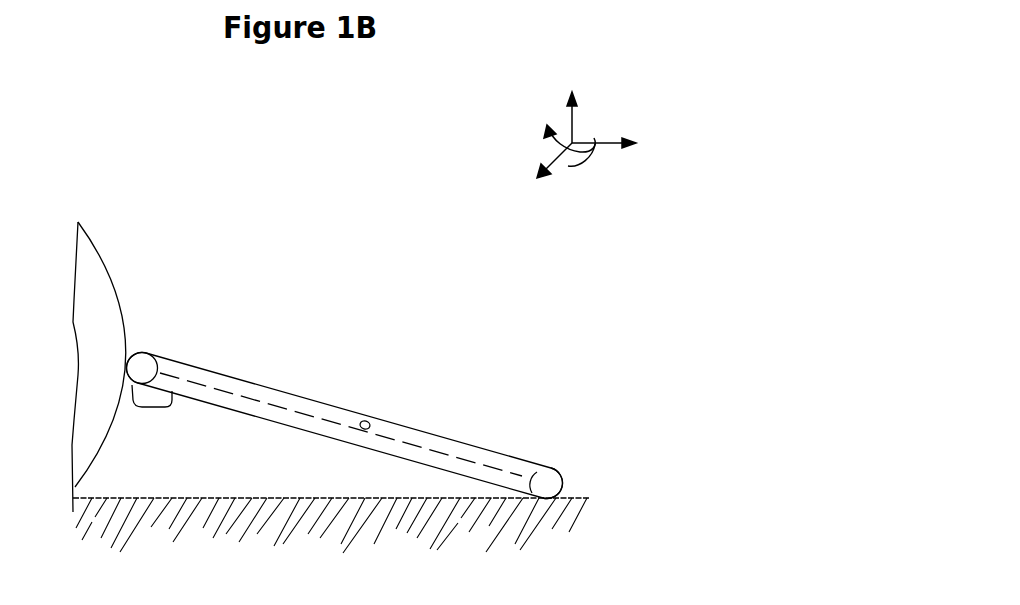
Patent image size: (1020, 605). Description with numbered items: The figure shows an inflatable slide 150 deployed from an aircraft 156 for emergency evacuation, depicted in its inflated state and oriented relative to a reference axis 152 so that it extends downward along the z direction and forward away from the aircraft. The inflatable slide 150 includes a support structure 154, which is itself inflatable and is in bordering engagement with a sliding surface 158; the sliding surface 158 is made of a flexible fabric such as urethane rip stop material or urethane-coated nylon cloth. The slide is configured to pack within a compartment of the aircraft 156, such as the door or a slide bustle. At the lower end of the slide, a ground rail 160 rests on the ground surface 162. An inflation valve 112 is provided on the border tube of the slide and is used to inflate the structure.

The inflation valve 112 is at (373, 422).
The inflatable slide 150 is at (385, 356).
The reference axis 152 is at (648, 80).
The support structure 154 is at (253, 417).
The aircraft 156 is at (103, 275).
The sliding surface 158 is at (253, 385).
The ground rail 160 is at (548, 478).
The ground surface 162 is at (570, 498).